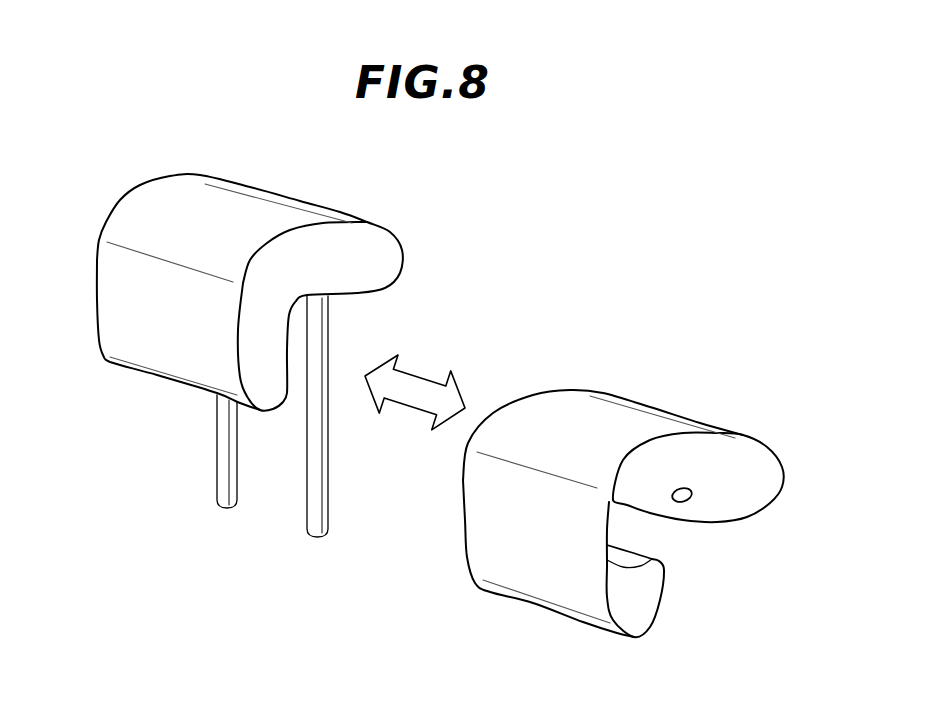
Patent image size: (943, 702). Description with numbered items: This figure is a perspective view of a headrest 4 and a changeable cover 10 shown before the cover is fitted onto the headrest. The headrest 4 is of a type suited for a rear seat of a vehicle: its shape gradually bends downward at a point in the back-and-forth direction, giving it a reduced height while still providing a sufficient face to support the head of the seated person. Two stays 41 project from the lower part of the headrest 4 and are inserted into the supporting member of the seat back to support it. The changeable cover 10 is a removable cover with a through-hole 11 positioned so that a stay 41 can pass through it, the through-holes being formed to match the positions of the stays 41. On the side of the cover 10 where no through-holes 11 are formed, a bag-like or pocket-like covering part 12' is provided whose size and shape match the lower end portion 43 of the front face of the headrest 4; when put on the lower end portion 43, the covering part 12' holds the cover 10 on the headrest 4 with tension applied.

The headrest 4 is at (221, 380).
The lower end portion of the front face of the headrest 43 is at (147, 223).
The stay 41 is at (225, 480).
The changeable cover 10 is at (651, 486).
The through-hole 11 is at (691, 494).
The covering part 12' is at (689, 578).